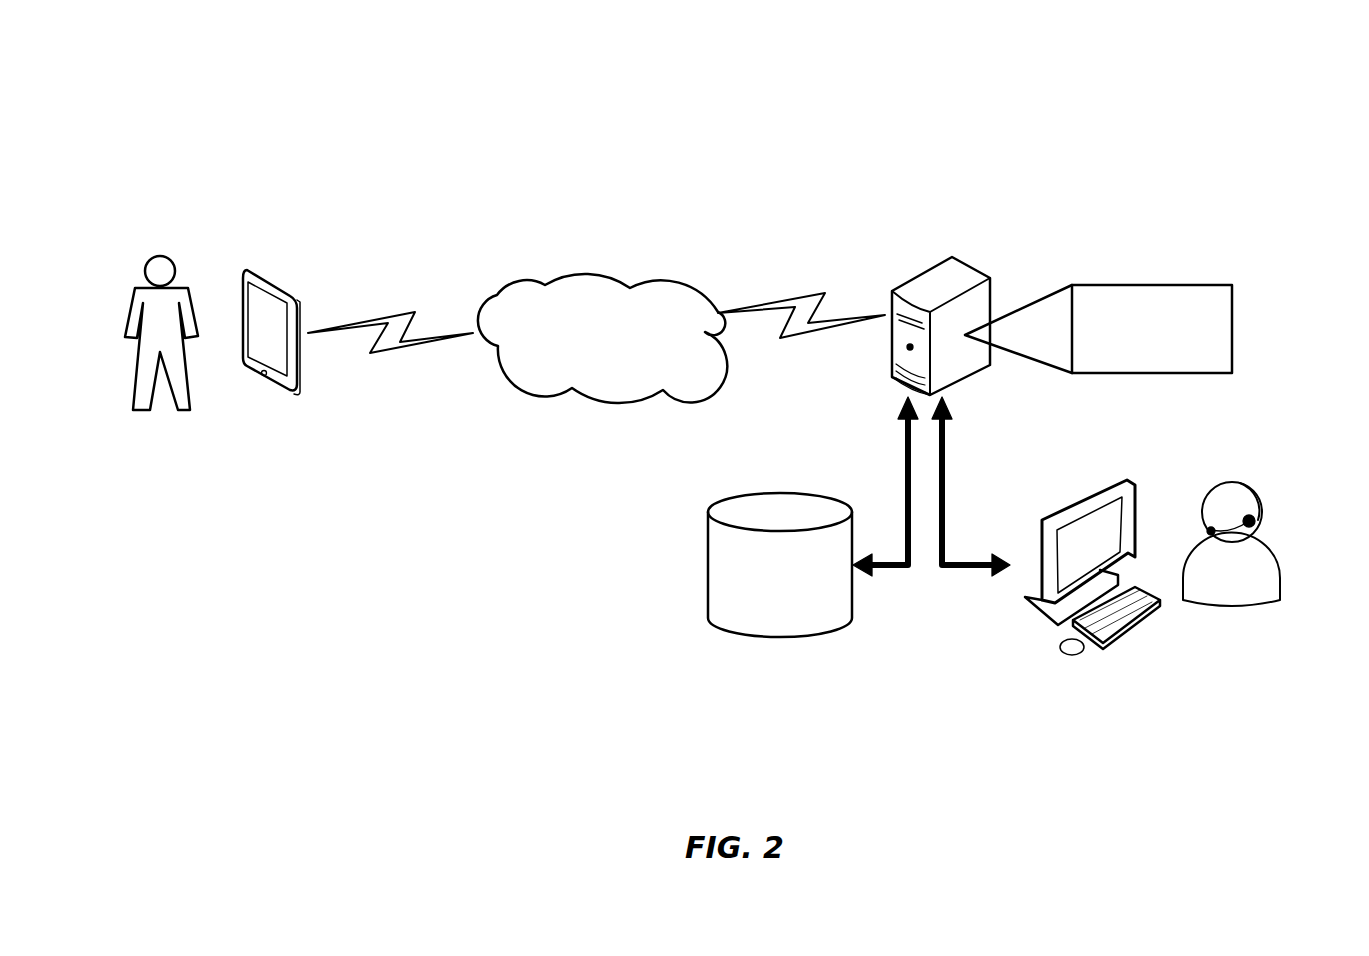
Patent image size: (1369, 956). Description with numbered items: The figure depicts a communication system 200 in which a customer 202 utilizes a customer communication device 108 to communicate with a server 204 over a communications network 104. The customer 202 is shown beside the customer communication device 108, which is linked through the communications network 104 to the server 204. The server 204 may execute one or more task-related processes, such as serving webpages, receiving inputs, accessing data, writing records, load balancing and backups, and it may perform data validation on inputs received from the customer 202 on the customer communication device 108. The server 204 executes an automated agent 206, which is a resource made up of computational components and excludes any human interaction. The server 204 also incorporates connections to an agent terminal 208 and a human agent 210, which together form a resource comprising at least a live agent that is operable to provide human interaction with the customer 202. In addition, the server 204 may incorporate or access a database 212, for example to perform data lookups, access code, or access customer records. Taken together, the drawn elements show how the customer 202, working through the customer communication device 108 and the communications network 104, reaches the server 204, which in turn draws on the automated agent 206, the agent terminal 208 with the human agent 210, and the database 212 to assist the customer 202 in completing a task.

The communication system 200 is at (1254, 88).
The customer 202 is at (172, 256).
The customer communication device 108 is at (295, 292).
The communications network 104 is at (668, 283).
The server 204 is at (957, 270).
The automated agent 206 is at (1137, 282).
The agent terminal 208 is at (1120, 478).
The human agent 210 is at (1265, 543).
The database 212 is at (834, 617).